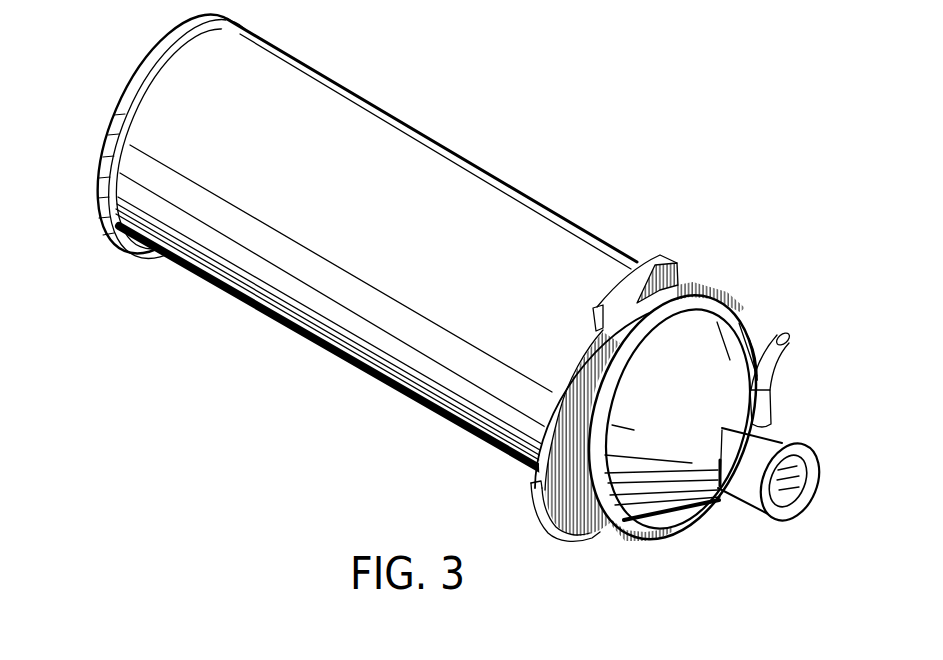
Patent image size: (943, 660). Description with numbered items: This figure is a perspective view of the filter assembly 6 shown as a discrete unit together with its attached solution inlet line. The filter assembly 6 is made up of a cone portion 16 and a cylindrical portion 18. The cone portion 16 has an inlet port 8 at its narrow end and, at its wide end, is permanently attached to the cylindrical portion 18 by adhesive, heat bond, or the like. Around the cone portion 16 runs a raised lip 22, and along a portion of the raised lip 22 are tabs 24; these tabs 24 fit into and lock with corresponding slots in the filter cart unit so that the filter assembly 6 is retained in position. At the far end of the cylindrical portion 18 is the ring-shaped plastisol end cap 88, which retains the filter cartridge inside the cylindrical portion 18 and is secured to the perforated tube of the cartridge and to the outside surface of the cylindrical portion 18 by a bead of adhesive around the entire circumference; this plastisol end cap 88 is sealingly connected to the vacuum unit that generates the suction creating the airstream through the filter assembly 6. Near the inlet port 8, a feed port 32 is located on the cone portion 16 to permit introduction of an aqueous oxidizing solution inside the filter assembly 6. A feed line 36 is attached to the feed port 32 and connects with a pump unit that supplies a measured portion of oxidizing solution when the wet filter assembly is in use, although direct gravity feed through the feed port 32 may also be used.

The filter assembly 6 is at (452, 291).
The plastisol end cap 88 is at (133, 81).
The cylindrical portion 18 is at (367, 226).
The raised lip 22 is at (566, 361).
The tabs 24 is at (668, 255).
The cone portion 16 is at (665, 435).
The inlet port 8 is at (790, 444).
The feed port 32 is at (773, 412).
The feed line 36 is at (784, 348).